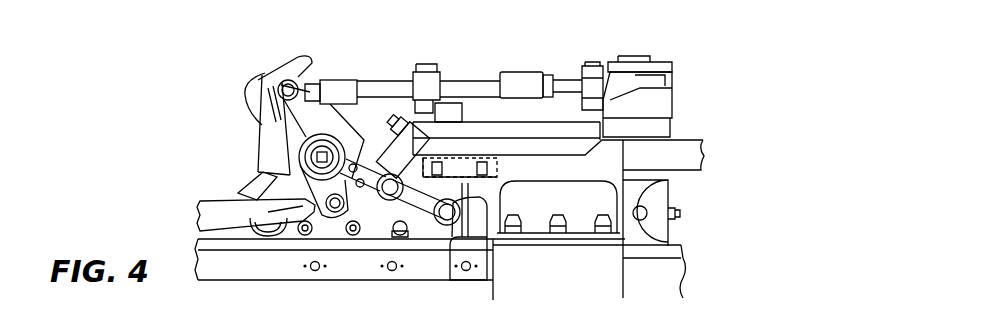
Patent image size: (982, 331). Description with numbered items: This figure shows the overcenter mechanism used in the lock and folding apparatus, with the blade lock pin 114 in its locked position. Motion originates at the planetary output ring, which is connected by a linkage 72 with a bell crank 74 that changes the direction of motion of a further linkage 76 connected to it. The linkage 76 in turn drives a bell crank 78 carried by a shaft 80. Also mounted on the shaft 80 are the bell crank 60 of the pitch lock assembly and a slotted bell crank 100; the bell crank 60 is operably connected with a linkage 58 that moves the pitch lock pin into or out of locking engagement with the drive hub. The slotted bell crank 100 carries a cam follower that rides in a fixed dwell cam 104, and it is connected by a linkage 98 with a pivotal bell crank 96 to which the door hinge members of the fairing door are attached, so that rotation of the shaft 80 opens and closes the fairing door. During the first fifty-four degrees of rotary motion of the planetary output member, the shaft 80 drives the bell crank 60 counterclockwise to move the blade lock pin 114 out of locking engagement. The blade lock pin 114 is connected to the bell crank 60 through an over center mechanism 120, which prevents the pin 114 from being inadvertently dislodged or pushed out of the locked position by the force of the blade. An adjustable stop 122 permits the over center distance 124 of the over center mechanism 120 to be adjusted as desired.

The linkage 58 is at (200, 216).
The bell crank 60 is at (348, 192).
The linkage 72 is at (671, 80).
The bell crank 74 is at (667, 68).
The linkage 76 is at (517, 72).
The bell crank 78 is at (296, 83).
The shaft 80 is at (312, 157).
The pivotal bell crank 96 is at (422, 67).
The linkage 98 is at (363, 82).
The slotted bell crank 100 is at (244, 90).
The fixed dwell cam 104 is at (255, 67).
The blade lock pin 114 is at (460, 285).
The over center mechanism 120 is at (463, 158).
The adjustable stop 122 is at (407, 125).
The over center distance 124 is at (363, 207).